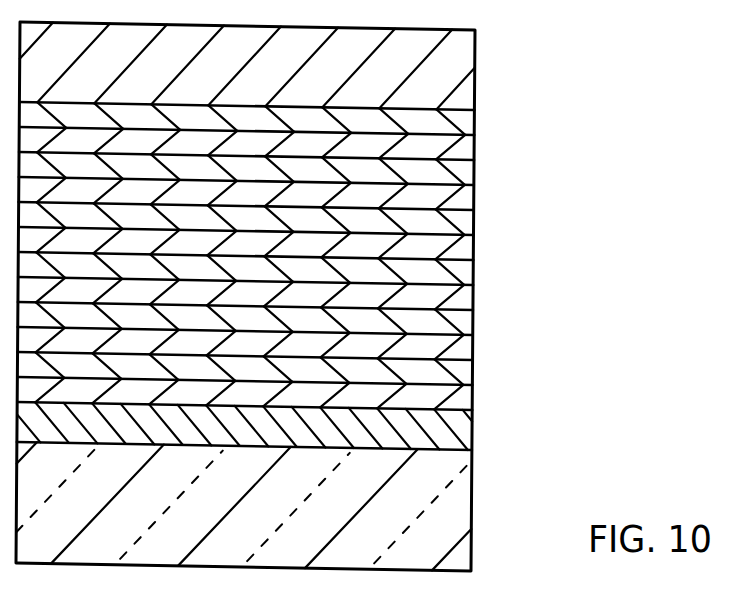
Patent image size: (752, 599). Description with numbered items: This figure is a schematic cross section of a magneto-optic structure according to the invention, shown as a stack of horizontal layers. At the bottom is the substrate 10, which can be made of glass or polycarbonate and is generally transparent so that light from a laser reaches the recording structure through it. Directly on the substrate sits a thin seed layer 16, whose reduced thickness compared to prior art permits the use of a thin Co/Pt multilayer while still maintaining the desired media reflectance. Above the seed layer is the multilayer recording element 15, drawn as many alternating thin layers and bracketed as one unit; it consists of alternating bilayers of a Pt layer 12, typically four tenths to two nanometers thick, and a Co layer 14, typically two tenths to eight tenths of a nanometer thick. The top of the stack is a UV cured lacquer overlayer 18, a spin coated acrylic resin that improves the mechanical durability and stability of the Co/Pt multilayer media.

The substrate 10 is at (465, 517).
The Pt layer 12 is at (540, 112).
The Co layer 14 is at (466, 362).
The multilayer recording element 15 is at (318, 257).
The seed layer 16 is at (465, 443).
The lacquer overlayer 18 is at (475, 52).